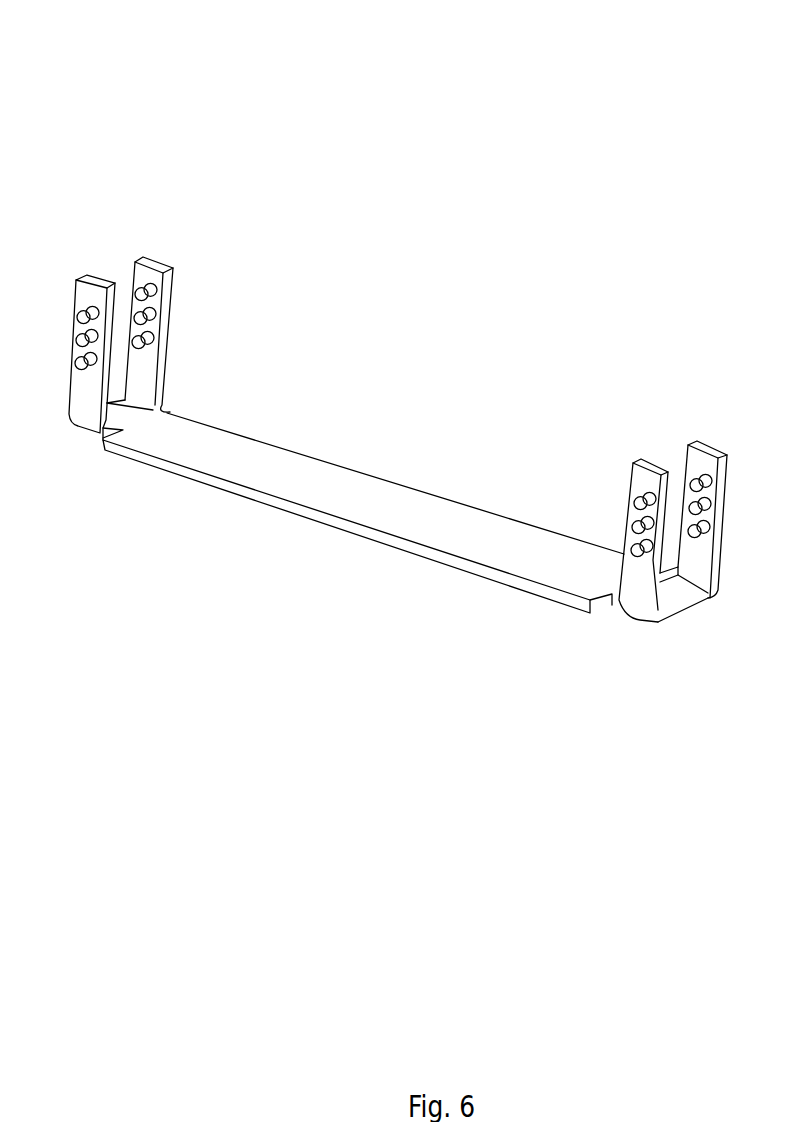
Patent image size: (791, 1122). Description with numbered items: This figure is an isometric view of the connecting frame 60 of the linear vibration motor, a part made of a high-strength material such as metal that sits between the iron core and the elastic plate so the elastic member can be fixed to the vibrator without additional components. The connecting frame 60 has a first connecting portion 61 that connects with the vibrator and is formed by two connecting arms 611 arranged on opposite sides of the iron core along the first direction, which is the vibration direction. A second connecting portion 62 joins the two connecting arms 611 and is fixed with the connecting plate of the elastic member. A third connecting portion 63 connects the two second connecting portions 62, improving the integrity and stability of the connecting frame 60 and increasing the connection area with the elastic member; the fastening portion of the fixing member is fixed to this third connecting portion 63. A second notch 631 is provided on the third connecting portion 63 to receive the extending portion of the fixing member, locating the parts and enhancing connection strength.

The connecting frame 60 is at (372, 50).
The first connecting portion 61 is at (259, 262).
The connecting arm 611 is at (110, 313).
The second connecting portion 62 is at (680, 608).
The third connecting portion 63 is at (437, 533).
The second notch 631 is at (167, 410).